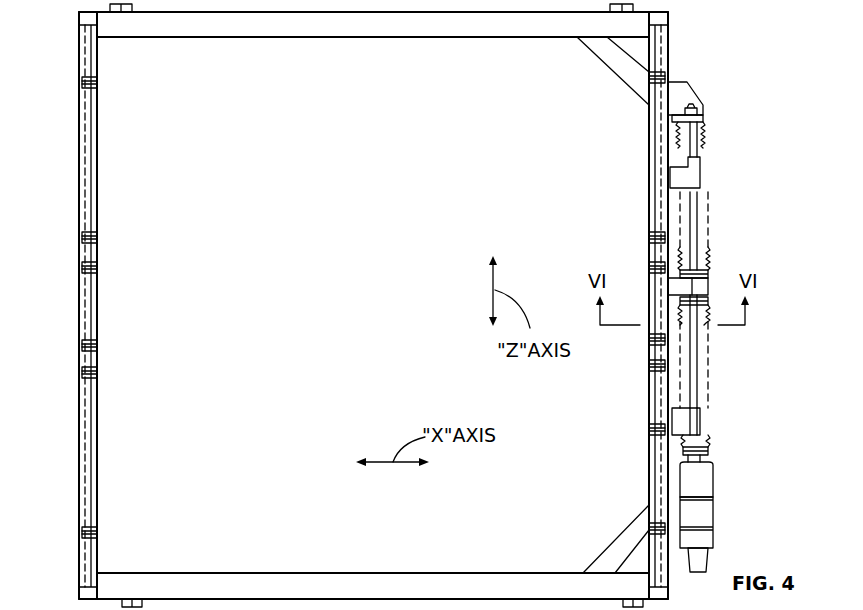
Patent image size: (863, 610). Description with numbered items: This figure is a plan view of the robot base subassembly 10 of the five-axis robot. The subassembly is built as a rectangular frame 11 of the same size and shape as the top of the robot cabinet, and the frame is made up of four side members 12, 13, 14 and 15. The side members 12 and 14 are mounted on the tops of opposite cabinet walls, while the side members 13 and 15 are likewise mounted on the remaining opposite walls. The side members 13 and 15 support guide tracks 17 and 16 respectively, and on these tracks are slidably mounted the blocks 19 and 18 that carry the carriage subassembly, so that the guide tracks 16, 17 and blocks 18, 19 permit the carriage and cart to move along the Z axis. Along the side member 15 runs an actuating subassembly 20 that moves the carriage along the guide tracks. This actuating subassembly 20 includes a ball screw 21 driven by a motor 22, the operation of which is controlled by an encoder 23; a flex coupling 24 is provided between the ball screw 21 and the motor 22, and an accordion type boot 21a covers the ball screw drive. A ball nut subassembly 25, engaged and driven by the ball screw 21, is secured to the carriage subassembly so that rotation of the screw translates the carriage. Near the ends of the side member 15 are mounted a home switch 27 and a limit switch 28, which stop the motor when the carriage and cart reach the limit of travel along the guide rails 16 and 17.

The robot base subassembly 10 is at (405, 305).
The rectangular frame 11 is at (491, 561).
The side member 12 is at (558, 580).
The side member 13 is at (115, 305).
The side member 14 is at (512, 32).
The side member 15 is at (630, 305).
The guide track 16 is at (665, 447).
The guide track 17 is at (95, 437).
The block 18 is at (650, 264).
The block 19 is at (97, 267).
The actuating subassembly 20 is at (728, 327).
The ball screw 21 is at (718, 245).
The accordion type boot 21a is at (703, 149).
The motor 22 is at (712, 518).
The encoder 23 is at (710, 557).
The flex coupling 24 is at (710, 477).
The ball nut subassembly 25 is at (700, 291).
The home switch 27 is at (692, 176).
The limit switch 28 is at (700, 436).